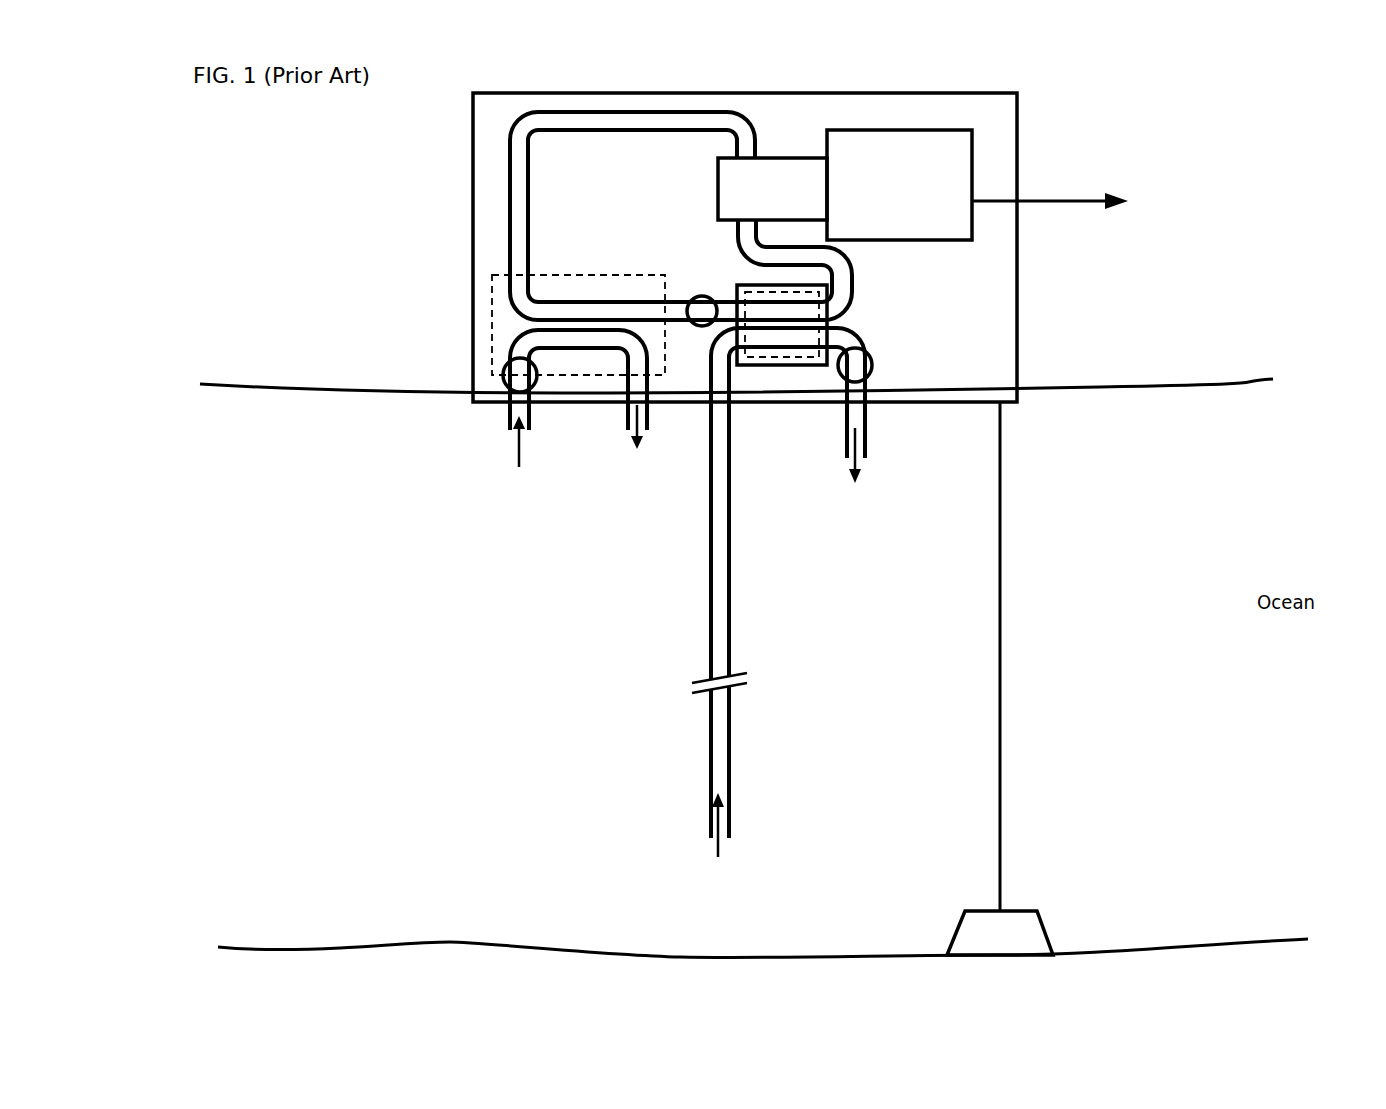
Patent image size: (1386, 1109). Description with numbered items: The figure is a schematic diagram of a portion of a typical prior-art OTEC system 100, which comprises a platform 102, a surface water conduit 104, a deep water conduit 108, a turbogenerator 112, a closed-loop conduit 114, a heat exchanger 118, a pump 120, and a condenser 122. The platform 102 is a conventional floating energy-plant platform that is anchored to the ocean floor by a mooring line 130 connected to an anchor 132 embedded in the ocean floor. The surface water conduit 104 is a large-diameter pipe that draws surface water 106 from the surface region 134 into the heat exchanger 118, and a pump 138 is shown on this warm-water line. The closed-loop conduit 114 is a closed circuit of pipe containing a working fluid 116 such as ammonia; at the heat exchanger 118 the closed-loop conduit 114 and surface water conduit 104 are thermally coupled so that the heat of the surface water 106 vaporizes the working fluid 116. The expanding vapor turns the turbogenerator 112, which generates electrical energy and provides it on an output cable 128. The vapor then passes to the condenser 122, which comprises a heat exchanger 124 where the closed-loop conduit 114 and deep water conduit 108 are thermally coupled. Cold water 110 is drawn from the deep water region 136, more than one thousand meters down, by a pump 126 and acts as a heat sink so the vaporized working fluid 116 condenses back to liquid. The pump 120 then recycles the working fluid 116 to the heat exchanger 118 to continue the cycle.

The OTEC system 100 is at (308, 179).
The platform 102 is at (473, 200).
The surface water conduit 104 is at (510, 410).
The surface water 106 is at (602, 338).
The deep water conduit 108 is at (709, 710).
The cold water 110 is at (717, 730).
The turbogenerator 112 is at (718, 193).
The closed-loop conduit 114 is at (530, 193).
The working fluid 116 is at (519, 248).
The heat exchanger 118 is at (492, 320).
The pump 120 is at (702, 296).
The condenser 122 is at (830, 326).
The heat exchanger 124 is at (757, 360).
The pump 126 is at (875, 365).
The output cable 128 is at (1053, 200).
The mooring line 130 is at (1002, 821).
The anchor 132 is at (1043, 920).
The surface region 134 is at (367, 634).
The deep water region 136 is at (660, 908).
The warm water pump 138 is at (503, 382).